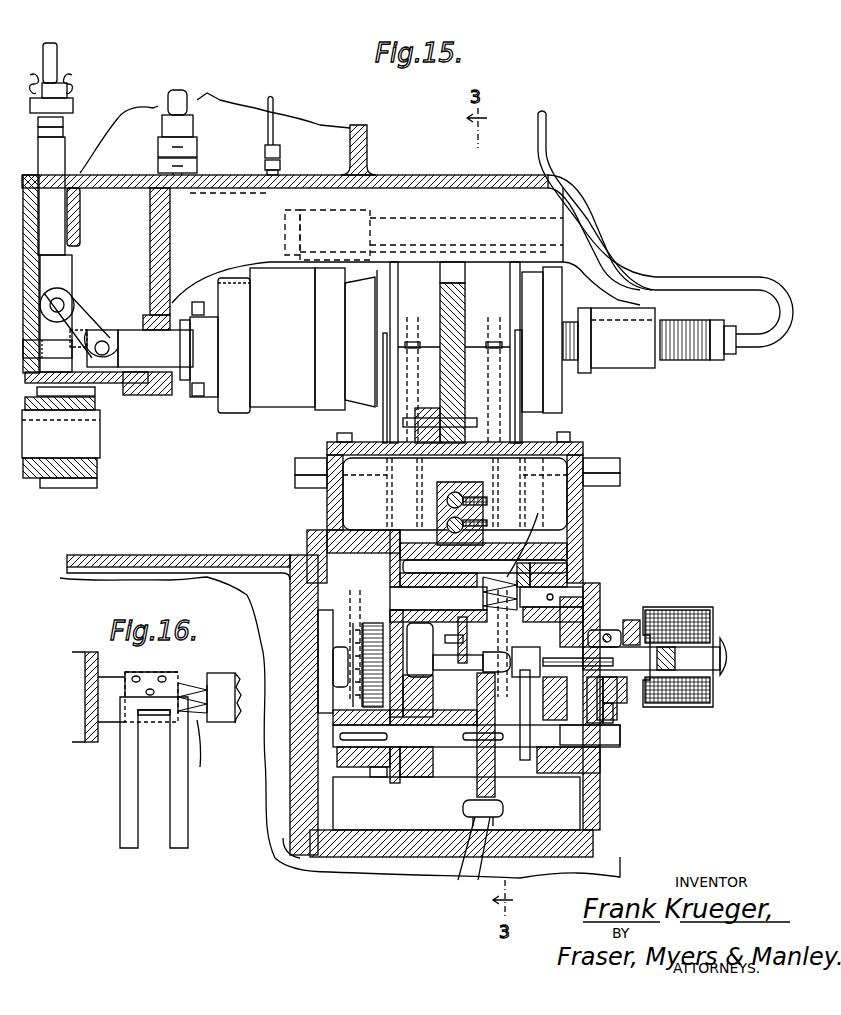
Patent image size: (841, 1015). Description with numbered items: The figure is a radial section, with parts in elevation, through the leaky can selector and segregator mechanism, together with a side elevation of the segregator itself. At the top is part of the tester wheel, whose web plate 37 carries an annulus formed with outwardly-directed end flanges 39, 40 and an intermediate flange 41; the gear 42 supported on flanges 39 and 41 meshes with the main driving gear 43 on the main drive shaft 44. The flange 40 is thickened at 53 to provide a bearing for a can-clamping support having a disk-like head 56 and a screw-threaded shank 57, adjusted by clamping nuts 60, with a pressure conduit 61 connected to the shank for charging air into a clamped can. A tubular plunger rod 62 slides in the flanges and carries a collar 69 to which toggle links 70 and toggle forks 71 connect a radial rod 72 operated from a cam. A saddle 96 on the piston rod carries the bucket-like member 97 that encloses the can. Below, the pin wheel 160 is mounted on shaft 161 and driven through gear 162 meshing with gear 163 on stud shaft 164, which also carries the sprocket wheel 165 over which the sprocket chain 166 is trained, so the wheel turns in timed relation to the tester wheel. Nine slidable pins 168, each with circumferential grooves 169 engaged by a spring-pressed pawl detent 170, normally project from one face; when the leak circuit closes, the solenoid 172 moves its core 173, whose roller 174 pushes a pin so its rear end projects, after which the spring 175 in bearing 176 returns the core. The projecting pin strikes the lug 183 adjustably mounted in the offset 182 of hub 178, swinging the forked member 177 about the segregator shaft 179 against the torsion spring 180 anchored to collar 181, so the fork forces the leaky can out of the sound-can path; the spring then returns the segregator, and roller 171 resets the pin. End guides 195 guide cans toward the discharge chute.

In FIG. 15, the web plate 37 is at (367, 150).
In FIG. 15, the flange 39 is at (65, 278).
In FIG. 15, the flange 40 is at (612, 270).
In FIG. 15, the flange 41 is at (170, 228).
In FIG. 15, the gear 42 is at (97, 392).
In FIG. 15, the main driving gear 43 is at (97, 483).
In FIG. 15, the main drive shaft 44 is at (61, 434).
In FIG. 15, the thickened portion 53 is at (625, 368).
In FIG. 15, the disk-like head 56 is at (562, 385).
In FIG. 15, the screw-threaded shank 57 is at (700, 360).
In FIG. 15, the clamping nuts 60 is at (585, 373).
In FIG. 15, the pressure conduit 61 is at (745, 265).
In FIG. 15, the plunger rod 62 is at (133, 330).
In FIG. 15, the collar 69 is at (105, 328).
In FIG. 15, the toggle links 70 is at (73, 305).
In FIG. 15, the toggle forks 71 is at (72, 272).
In FIG. 15, the rod 72 is at (52, 62).
In FIG. 15, the saddle 96 is at (376, 226).
In FIG. 15, the bucket-like member 97 is at (278, 340).
In FIG. 15, the pin wheel 160 is at (477, 775).
In FIG. 15, the shaft 161 is at (476, 737).
In FIG. 15, the gear 162 is at (378, 777).
In FIG. 15, the gear 163 is at (350, 687).
In FIG. 15, the stud shaft 164 is at (383, 640).
In FIG. 15, the sprocket wheel 165 is at (355, 640).
In FIG. 15, the sprocket chain 166 is at (340, 716).
In FIG. 15, the slidable pins 168 is at (503, 810).
In FIG. 15, the circumferential grooves 169 is at (472, 856).
In FIG. 15, the pawl detent 170 is at (500, 797).
In FIG. 15, the roller 171 is at (452, 670).
In FIG. 15, the solenoid 172 is at (700, 628).
In FIG. 15, the core 173 is at (700, 655).
In FIG. 15, the roller 174 is at (590, 633).
In FIG. 15, the spring 175 is at (610, 690).
In FIG. 15, the bearing 176 is at (600, 735).
In FIG. 15, the forked member 177 is at (490, 508).
In FIG. 16, the forked member 177 is at (173, 798).
In FIG. 16, the hub 178 is at (113, 722).
In FIG. 15, the segregator shaft 179 is at (438, 598).
In FIG. 16, the segregator shaft 179 is at (213, 752).
In FIG. 15, the torsion spring 180 is at (523, 553).
In FIG. 16, the torsion spring 180 is at (193, 680).
In FIG. 15, the collar 181 is at (543, 567).
In FIG. 16, the collar 181 is at (223, 722).
In FIG. 15, the offset 182 is at (467, 630).
In FIG. 15, the lug 183 is at (580, 603).
In FIG. 15, the end guides 195 is at (612, 490).